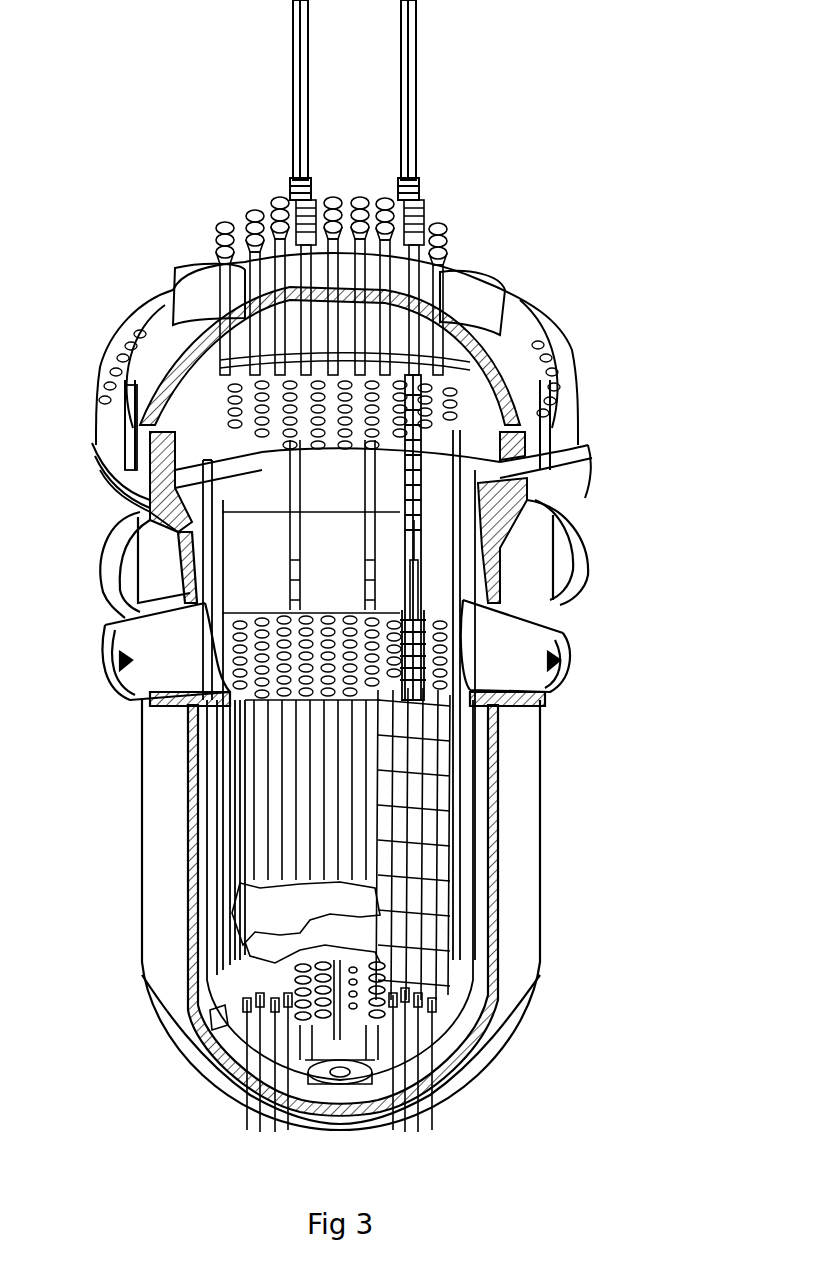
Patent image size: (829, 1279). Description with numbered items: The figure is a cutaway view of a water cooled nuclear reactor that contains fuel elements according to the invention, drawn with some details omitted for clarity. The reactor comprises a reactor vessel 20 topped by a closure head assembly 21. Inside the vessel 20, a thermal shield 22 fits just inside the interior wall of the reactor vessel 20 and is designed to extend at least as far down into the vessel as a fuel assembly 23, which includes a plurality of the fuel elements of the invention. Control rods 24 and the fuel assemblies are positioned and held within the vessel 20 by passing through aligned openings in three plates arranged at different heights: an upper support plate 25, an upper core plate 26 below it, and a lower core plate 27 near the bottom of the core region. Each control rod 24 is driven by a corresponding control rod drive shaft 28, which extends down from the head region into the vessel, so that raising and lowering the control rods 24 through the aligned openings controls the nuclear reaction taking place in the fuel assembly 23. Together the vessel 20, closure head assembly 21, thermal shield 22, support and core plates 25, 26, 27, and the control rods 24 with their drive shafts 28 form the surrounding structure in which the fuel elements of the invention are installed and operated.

The reactor vessel 20 is at (180, 816).
The closure head assembly 21 is at (512, 333).
The thermal shield 22 is at (206, 769).
The fuel assembly 23 is at (337, 780).
The control rods 24 is at (438, 411).
The upper support plate 25 is at (183, 489).
The upper core plate 26 is at (233, 691).
The lower core plate 27 is at (422, 951).
The control rod drive shafts 28 is at (420, 546).